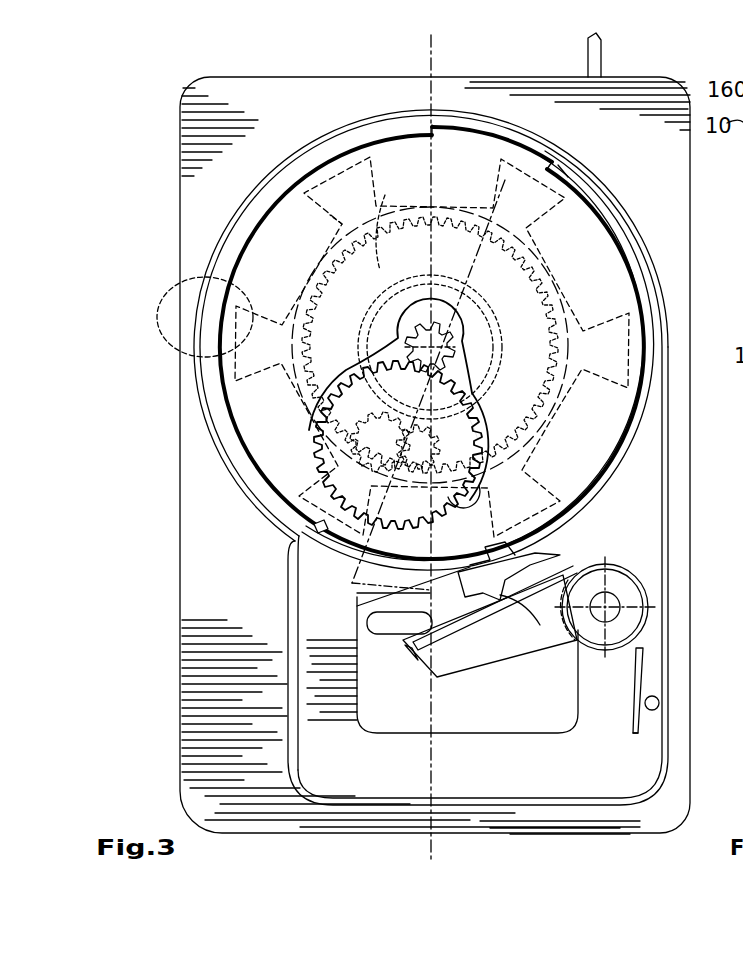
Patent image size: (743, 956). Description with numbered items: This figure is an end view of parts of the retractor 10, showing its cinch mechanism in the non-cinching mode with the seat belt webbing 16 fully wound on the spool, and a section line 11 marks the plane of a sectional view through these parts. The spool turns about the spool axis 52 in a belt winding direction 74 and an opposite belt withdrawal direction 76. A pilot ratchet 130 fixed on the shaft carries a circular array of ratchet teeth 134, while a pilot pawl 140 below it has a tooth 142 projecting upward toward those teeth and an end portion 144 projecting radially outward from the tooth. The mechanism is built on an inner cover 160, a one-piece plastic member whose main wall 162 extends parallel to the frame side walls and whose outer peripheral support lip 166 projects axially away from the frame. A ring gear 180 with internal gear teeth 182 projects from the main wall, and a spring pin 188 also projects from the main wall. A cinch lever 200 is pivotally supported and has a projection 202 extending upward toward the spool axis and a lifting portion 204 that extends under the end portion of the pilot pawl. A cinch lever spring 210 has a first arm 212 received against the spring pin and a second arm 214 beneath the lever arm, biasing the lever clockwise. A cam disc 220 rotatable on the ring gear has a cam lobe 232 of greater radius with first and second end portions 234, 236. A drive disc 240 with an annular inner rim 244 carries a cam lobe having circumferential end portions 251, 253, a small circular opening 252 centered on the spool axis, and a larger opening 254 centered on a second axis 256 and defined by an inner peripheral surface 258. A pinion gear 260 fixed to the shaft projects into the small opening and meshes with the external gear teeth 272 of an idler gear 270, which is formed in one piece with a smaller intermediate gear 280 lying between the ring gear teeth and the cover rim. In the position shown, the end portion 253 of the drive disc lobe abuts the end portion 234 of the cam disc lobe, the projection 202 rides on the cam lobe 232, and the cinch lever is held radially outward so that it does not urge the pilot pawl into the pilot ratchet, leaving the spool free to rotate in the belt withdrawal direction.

The retractor 10 is at (128, 120).
The section line 11 is at (462, 852).
The seat belt webbing 16 is at (600, 62).
The spool axis 52 is at (470, 333).
The belt winding direction 74 is at (592, 353).
The belt withdrawal direction 76 is at (269, 325).
The pilot ratchet 130 is at (372, 347).
The ratchet teeth 134 is at (186, 317).
The pilot pawl 140 is at (358, 705).
The tooth 142 is at (360, 607).
The end portion 144 is at (365, 640).
The inner cover 160 is at (190, 95).
The main wall 162 is at (225, 528).
The outer peripheral support lip 166 is at (230, 352).
The ring gear 180 is at (322, 250).
The internal gear teeth 182 is at (393, 221).
The spring pin 188 is at (660, 704).
The cinch lever 200 is at (545, 650).
The projection 202 is at (560, 565).
The lifting portion 204 is at (405, 660).
The cinch lever spring 210 is at (652, 675).
The first arm 212 is at (637, 738).
The second arm 214 is at (487, 656).
The cam disc 220 is at (620, 487).
The cam lobe 232 is at (612, 193).
The first end portion 234 is at (562, 168).
The second end portion 236 is at (282, 545).
The drive disc 240 is at (437, 313).
The annular inner rim 244 is at (430, 345).
The circumferential end portion 251 is at (431, 125).
The small diameter circular opening 252 is at (430, 331).
The circumferential end portion 253 is at (575, 180).
The larger diameter circular opening 254 is at (355, 360).
The second axis 256 is at (426, 445).
The inner peripheral surface 258 is at (478, 490).
The pinion gear 260 is at (423, 393).
The idler gear 270 is at (478, 422).
The external gear teeth 272 is at (327, 395).
The intermediate gear 280 is at (368, 428).